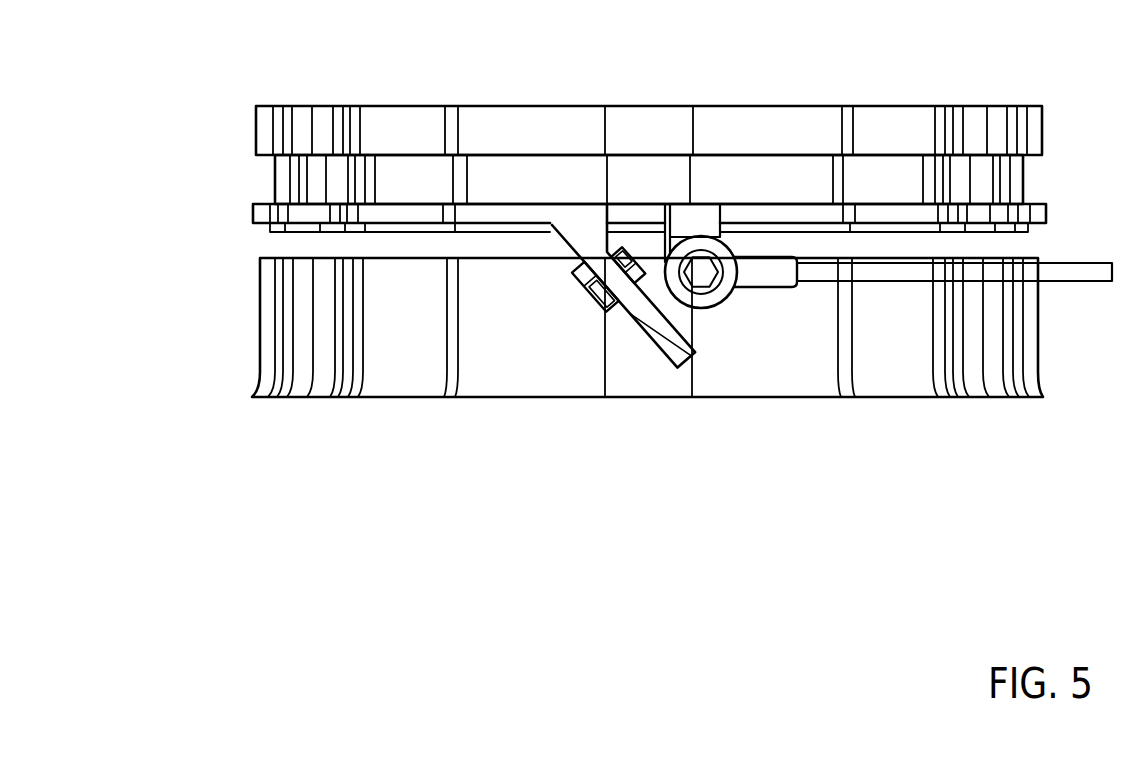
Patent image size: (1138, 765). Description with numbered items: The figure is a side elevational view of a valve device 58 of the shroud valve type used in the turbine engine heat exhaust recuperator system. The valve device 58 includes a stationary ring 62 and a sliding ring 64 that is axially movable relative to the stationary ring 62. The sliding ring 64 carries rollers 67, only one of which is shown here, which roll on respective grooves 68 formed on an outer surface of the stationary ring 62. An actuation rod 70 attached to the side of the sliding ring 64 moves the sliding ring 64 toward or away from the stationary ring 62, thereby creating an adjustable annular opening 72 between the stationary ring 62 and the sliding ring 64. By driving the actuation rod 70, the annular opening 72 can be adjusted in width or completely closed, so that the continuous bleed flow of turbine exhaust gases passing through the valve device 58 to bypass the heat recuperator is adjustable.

The valve device 58 is at (184, 194).
The stationary ring 62 is at (258, 329).
The sliding ring 64 is at (257, 132).
The roller 67 is at (603, 285).
The groove 68 is at (690, 357).
The actuation rod 70 is at (1067, 273).
The adjustable annular opening 72 is at (310, 245).